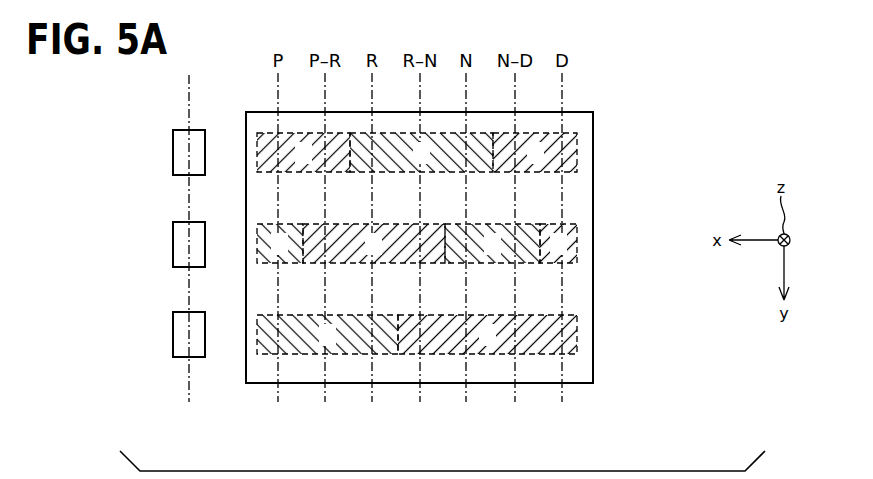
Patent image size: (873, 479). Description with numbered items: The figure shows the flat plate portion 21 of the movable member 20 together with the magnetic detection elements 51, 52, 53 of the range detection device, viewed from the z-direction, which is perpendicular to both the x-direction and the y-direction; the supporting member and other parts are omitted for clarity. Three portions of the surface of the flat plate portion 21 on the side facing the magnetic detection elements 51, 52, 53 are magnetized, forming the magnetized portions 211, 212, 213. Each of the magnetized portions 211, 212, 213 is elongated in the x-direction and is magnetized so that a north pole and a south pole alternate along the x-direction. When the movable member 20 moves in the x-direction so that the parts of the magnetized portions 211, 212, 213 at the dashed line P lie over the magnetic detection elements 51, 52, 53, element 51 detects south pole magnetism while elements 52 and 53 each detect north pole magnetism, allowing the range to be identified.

The movable member 20 is at (594, 383).
The flat plate portion 21 is at (490, 386).
The magnetized portion 211 is at (578, 153).
The magnetized portion 212 is at (578, 243).
The magnetized portion 213 is at (578, 335).
The magnetic detection element 51 is at (173, 155).
The magnetic detection element 52 is at (173, 245).
The magnetic detection element 53 is at (173, 336).